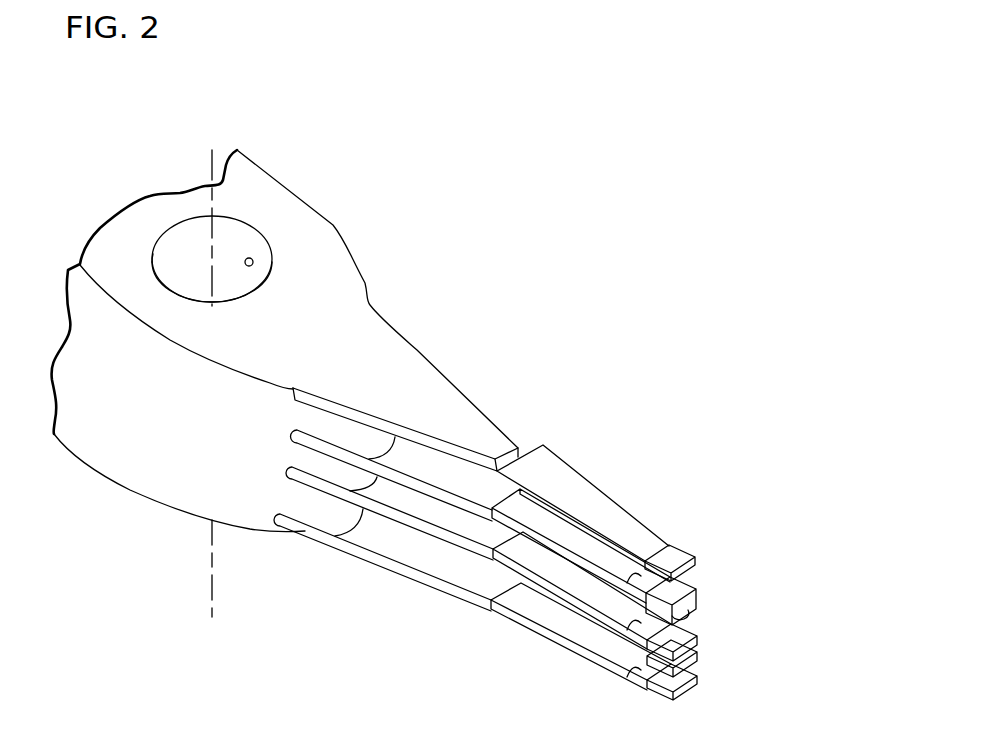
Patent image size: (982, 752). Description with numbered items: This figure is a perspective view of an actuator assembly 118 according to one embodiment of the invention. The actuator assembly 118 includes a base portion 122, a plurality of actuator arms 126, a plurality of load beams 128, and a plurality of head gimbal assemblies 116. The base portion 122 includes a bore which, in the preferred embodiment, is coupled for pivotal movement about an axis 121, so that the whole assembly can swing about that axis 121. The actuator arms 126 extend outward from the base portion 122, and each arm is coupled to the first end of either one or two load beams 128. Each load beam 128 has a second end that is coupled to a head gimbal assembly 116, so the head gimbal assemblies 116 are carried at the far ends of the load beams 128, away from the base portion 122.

The base portion 122 is at (322, 232).
The axis 121 is at (210, 538).
The actuator assembly 118 is at (431, 327).
The actuator arms 126 is at (488, 438).
The load beams 128 is at (588, 637).
The head gimbal assemblies 116 is at (705, 634).